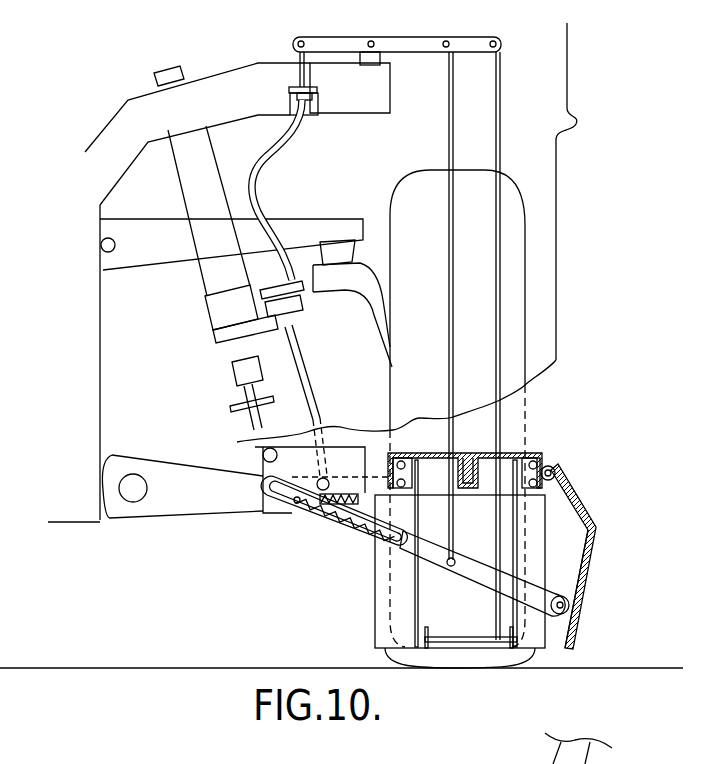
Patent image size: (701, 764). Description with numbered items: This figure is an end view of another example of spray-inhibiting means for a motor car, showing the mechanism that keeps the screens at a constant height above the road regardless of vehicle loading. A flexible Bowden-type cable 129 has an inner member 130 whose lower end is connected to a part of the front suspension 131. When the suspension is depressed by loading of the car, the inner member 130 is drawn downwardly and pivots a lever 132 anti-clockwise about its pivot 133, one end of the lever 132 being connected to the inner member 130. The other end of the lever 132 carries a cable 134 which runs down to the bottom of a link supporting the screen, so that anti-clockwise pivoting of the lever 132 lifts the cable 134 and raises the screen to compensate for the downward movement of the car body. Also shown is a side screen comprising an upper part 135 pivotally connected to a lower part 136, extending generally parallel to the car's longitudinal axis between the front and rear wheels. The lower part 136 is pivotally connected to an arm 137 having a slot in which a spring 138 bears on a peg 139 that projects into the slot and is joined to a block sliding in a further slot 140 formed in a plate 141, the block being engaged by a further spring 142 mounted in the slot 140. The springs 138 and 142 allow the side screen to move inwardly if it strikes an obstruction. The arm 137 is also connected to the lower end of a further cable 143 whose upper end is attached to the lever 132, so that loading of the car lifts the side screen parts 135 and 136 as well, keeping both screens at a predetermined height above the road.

The flexible cable 129 is at (259, 183).
The inner member 130 is at (293, 298).
The front suspension 131 is at (215, 307).
The lever 132 is at (430, 42).
The pivot 133 is at (377, 41).
The cable 134 is at (497, 100).
The upper part of side screen 135 is at (573, 502).
The lower part of side screen 136 is at (570, 567).
The arm 137 is at (408, 543).
The spring 138 is at (355, 492).
The peg 139 is at (293, 500).
The further slot 140 is at (355, 492).
The plate 141 is at (270, 507).
The further spring 142 is at (344, 493).
The further cable 143 is at (448, 145).